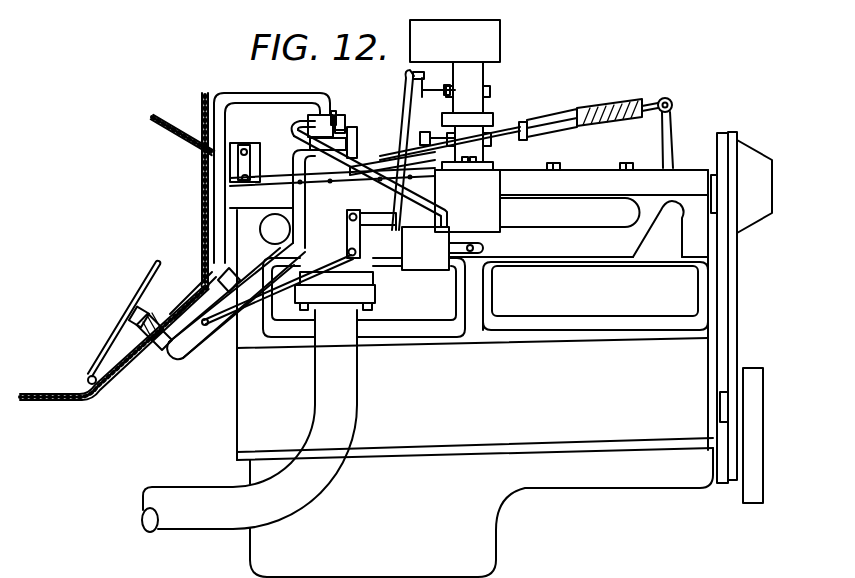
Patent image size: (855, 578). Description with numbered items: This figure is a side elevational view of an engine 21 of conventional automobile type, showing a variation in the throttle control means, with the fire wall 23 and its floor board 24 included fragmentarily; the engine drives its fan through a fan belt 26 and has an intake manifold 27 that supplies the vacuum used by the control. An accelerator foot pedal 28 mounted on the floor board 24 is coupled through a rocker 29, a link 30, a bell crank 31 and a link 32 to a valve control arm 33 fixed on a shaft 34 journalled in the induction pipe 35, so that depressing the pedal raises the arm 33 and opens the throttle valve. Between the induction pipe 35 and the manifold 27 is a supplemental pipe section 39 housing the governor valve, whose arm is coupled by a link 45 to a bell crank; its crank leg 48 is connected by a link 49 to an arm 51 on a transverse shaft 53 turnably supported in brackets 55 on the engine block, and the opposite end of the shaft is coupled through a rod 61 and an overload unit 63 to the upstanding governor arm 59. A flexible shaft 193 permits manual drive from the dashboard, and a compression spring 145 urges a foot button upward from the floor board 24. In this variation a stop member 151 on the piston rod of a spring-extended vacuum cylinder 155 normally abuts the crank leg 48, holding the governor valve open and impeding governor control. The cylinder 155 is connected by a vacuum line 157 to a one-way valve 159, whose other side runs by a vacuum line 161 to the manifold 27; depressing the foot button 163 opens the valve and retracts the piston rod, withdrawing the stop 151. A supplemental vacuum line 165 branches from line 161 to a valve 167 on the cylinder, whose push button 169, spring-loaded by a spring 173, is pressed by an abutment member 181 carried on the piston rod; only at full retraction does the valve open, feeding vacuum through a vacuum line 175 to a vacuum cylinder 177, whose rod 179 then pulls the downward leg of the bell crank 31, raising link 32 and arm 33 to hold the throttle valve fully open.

The engine 21 is at (250, 432).
The fire wall 23 is at (201, 98).
The floor board 24 is at (70, 393).
The fan belt 26 is at (738, 274).
The intake manifold 27 is at (566, 200).
The accelerator foot pedal 28 is at (143, 289).
The rocker 29 is at (202, 282).
The link 30 is at (257, 305).
The bell crank 31 is at (374, 216).
The link 32 is at (400, 185).
The valve control arm 33 is at (409, 110).
The shaft 34 is at (423, 92).
The induction pipe 35 is at (476, 75).
The supplemental pipe section 39 is at (490, 150).
The link 45 is at (448, 142).
The crank leg 48 is at (364, 162).
The link 49 is at (290, 188).
The arm 51 is at (243, 167).
The shaft 53 is at (243, 144).
The brackets 55 is at (224, 162).
The governor arm 59 is at (669, 122).
The rod 61 is at (505, 128).
The overload unit 63 is at (566, 102).
The compression spring 145 is at (142, 334).
The stop member 151 is at (297, 192).
The vacuum cylinder 155 is at (333, 143).
The vacuum line 157 is at (183, 357).
The one-way valve 159 is at (166, 352).
The vacuum line 161 is at (263, 229).
The foot button 163 is at (131, 311).
The supplemental vacuum line 165 is at (222, 214).
The valve 167 is at (311, 114).
The push button 169 is at (344, 126).
The spring 173 is at (336, 115).
The vacuum line 175 is at (293, 130).
The vacuum cylinder 177 is at (424, 262).
The rod 179 is at (400, 290).
The abutment member 181 is at (358, 129).
The flexible shaft 193 is at (188, 143).